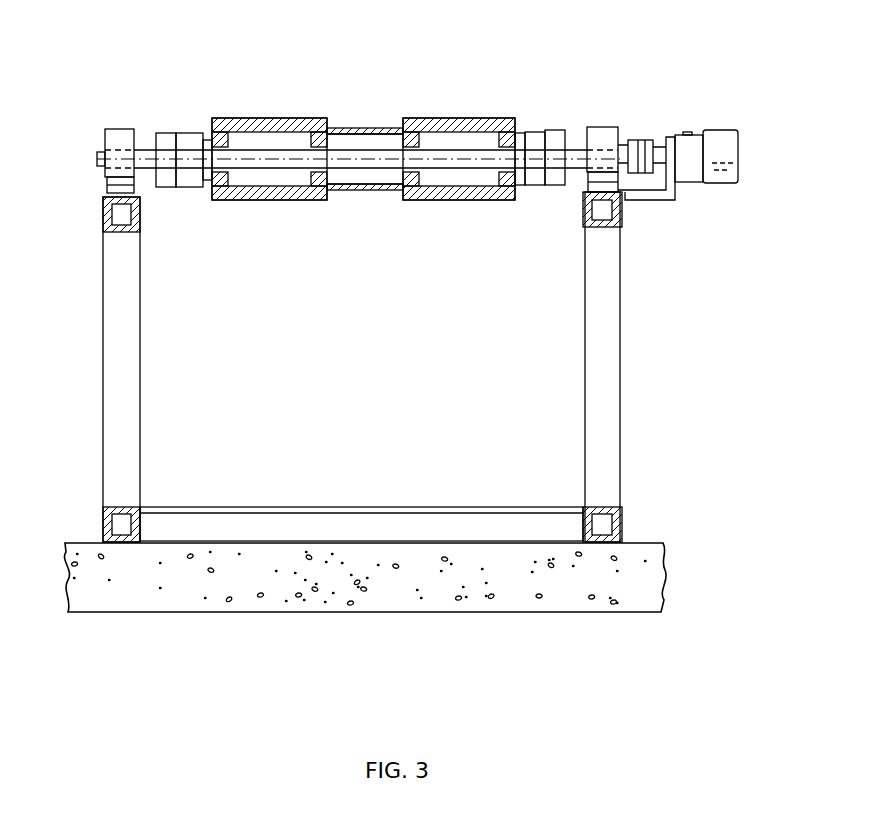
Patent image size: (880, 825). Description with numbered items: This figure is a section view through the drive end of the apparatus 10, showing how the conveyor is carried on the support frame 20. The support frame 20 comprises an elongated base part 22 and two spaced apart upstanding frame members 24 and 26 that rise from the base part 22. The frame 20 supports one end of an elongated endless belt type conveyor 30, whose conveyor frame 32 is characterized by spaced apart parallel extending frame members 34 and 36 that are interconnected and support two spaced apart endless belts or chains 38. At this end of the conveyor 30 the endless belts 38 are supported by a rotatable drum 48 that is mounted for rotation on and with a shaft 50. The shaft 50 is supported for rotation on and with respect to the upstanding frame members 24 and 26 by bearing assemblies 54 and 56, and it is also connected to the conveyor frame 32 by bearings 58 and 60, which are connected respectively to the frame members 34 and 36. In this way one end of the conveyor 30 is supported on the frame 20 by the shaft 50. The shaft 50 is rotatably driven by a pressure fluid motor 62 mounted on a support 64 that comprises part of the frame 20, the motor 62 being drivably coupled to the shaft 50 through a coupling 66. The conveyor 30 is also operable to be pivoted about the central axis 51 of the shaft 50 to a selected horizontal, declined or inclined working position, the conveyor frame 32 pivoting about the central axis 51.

The apparatus 10 is at (680, 100).
The support frame 20 is at (640, 483).
The elongated base part 22 is at (102, 527).
The upstanding frame member 24 is at (622, 305).
The upstanding frame member 26 is at (103, 330).
The endless belt type conveyor 30 is at (277, 212).
The conveyor frame 32 is at (203, 112).
The frame member 34 is at (533, 130).
The frame member 36 is at (187, 187).
The endless belt 38 is at (274, 117).
The rotatable drum 48 is at (366, 128).
The shaft 50 is at (353, 168).
The central axis 51 is at (94, 148).
The bearing assembly 54 is at (597, 127).
The bearing assembly 56 is at (117, 129).
The bearing 58 is at (550, 186).
The bearing 60 is at (160, 133).
The pressure fluid motor 62 is at (720, 132).
The support 64 is at (657, 200).
The coupling 66 is at (638, 140).